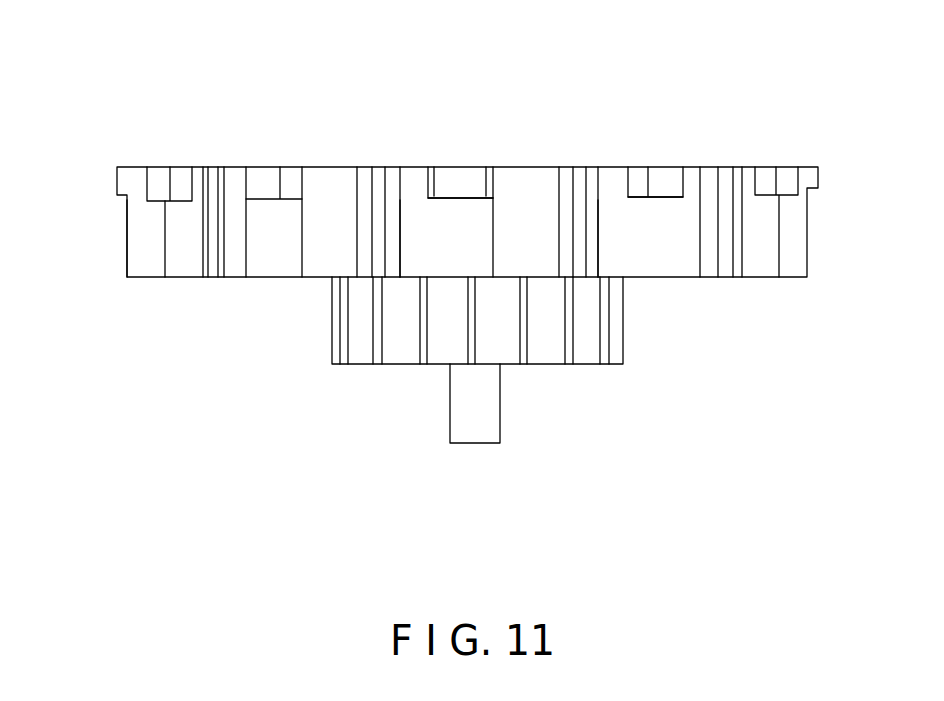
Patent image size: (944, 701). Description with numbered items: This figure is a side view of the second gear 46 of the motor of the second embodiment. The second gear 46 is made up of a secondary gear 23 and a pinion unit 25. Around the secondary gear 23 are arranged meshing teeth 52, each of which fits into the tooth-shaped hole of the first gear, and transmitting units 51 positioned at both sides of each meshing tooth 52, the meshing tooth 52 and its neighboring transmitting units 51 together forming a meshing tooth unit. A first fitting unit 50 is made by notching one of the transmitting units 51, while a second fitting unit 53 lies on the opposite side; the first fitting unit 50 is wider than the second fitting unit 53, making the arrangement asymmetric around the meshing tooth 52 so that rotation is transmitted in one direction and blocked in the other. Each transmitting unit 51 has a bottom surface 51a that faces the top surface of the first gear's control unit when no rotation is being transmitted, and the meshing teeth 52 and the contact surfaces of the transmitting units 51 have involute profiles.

The secondary gear 23 is at (150, 237).
The pinion unit 25 is at (409, 343).
The second gear 46 is at (749, 149).
The first fitting unit 50 is at (340, 180).
The transmitting unit 51 is at (273, 178).
The bottom surface 51a is at (484, 212).
The meshing tooth 52 is at (142, 183).
The second fitting unit 53 is at (415, 177).